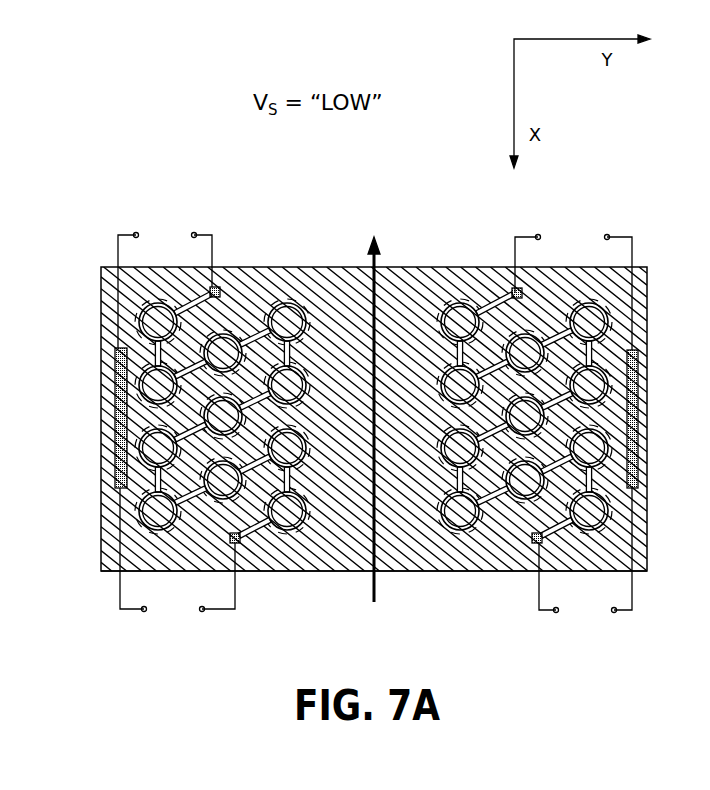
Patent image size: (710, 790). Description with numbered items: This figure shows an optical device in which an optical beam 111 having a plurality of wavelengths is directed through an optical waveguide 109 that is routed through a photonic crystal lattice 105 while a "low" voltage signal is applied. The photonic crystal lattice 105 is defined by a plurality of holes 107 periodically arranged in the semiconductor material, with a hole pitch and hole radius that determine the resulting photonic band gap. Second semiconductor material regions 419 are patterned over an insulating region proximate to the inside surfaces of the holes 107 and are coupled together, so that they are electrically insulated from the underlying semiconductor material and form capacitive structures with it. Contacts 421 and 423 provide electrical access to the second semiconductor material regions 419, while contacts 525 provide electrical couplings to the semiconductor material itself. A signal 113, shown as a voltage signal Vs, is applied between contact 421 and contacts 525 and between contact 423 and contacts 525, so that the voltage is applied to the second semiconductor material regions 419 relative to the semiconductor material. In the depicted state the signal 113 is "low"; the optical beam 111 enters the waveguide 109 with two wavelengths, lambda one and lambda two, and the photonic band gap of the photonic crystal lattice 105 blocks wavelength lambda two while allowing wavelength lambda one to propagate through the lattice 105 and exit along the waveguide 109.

The photonic crystal lattice 105 is at (160, 130).
The holes 107 is at (300, 298).
The optical waveguide 109 is at (392, 300).
The optical beam 111 is at (385, 245).
The signal 113 is at (185, 220).
The second semiconductor material regions 419 is at (338, 572).
The contact 421 is at (232, 268).
The contact 423 is at (244, 572).
The contacts 525 is at (117, 385).